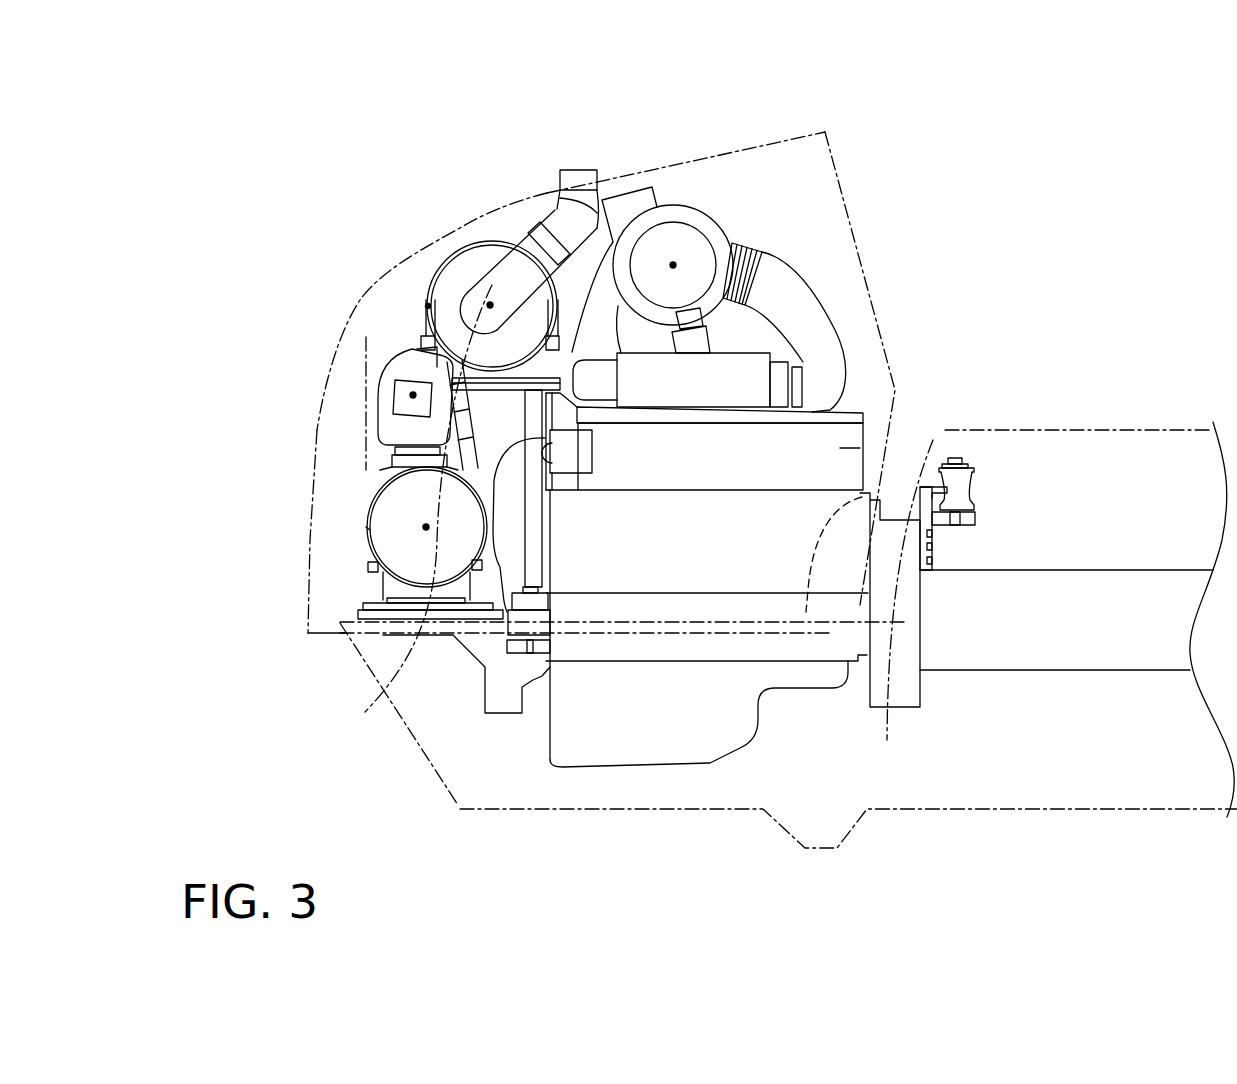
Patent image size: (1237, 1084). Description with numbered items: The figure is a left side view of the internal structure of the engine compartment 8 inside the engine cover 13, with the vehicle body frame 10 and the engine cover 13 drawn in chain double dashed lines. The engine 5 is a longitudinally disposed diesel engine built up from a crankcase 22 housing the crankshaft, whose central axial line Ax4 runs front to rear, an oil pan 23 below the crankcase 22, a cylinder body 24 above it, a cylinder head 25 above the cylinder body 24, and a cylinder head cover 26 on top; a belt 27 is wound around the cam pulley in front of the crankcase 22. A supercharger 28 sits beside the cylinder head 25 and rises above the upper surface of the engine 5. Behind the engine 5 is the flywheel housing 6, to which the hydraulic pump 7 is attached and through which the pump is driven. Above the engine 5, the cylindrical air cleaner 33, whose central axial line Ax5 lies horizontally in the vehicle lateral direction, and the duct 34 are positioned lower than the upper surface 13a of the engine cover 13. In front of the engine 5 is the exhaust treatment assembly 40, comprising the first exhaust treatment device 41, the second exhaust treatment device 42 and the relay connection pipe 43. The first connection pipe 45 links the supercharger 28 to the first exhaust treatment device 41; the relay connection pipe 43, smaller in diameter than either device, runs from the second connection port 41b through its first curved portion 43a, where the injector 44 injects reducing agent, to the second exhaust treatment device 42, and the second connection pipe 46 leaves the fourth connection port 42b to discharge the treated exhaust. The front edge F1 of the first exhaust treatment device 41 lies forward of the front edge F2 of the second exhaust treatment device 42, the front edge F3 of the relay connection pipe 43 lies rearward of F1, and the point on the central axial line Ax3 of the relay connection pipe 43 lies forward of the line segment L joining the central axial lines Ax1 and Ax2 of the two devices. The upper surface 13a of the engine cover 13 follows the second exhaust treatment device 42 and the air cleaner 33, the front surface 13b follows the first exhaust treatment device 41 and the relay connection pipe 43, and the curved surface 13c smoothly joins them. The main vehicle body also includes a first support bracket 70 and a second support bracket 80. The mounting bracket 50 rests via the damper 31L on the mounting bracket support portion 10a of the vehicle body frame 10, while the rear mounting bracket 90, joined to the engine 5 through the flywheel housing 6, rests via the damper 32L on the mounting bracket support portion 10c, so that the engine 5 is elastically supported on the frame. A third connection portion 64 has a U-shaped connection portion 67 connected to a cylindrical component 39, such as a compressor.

The engine cover 13 is at (836, 162).
The upper surface 13a is at (755, 148).
The front surface 13b is at (318, 420).
The curved surface 13c is at (400, 248).
The exhaust treatment assembly 40 is at (488, 235).
The second exhaust treatment device 42 is at (448, 290).
The fourth connection port 42b is at (518, 237).
The central axial line of the second exhaust treatment device Ax2 is at (490, 305).
The second connection pipe 46 is at (557, 227).
The first connection pipe 45 is at (578, 357).
The third connection portion 64 is at (563, 483).
The injector 44 is at (380, 392).
The front edge of the relay connection pipe F3 is at (395, 392).
The central axial line of the relay connection pipe Ax3 is at (415, 395).
The front edge of the second exhaust treatment device F2 is at (428, 306).
The second support bracket 80 is at (425, 335).
The relay connection pipe 43 is at (377, 412).
The first curved portion 43a is at (392, 457).
The second connection port 41b is at (395, 465).
The first exhaust treatment device 41 is at (368, 582).
The U-shaped connection portion 67 is at (367, 515).
The front edge of the first exhaust treatment device F1 is at (367, 530).
The central axial line of the first exhaust treatment device Ax1 is at (426, 527).
The first support bracket 70 is at (400, 598).
The line segment L is at (419, 507).
The damper 31L is at (399, 722).
The mounting bracket support portion 10a is at (503, 715).
The mounting bracket 50 is at (493, 663).
The belt 27 is at (538, 567).
The cylindrical component 39 is at (593, 447).
The oil pan 23 is at (707, 737).
The crankcase 22 is at (763, 640).
The engine 5 is at (843, 407).
The cylinder head cover 26 is at (865, 413).
The cylinder head 25 is at (845, 448).
The supercharger 28 is at (630, 367).
The engine compartment 8 is at (777, 193).
The air cleaner 33 is at (702, 222).
The central axial line of the air cleaner Ax5 is at (673, 265).
The duct 34 is at (793, 268).
The cylinder body 24 is at (850, 790).
The central axial line of the crankshaft Ax4 is at (911, 613).
The flywheel housing 6 is at (915, 707).
The rear mounting bracket 90 is at (922, 487).
The damper 32L is at (968, 478).
The mounting bracket support portion 10c is at (975, 518).
The hydraulic pump 7 is at (1105, 590).
The vehicle body frame 10 is at (1105, 428).